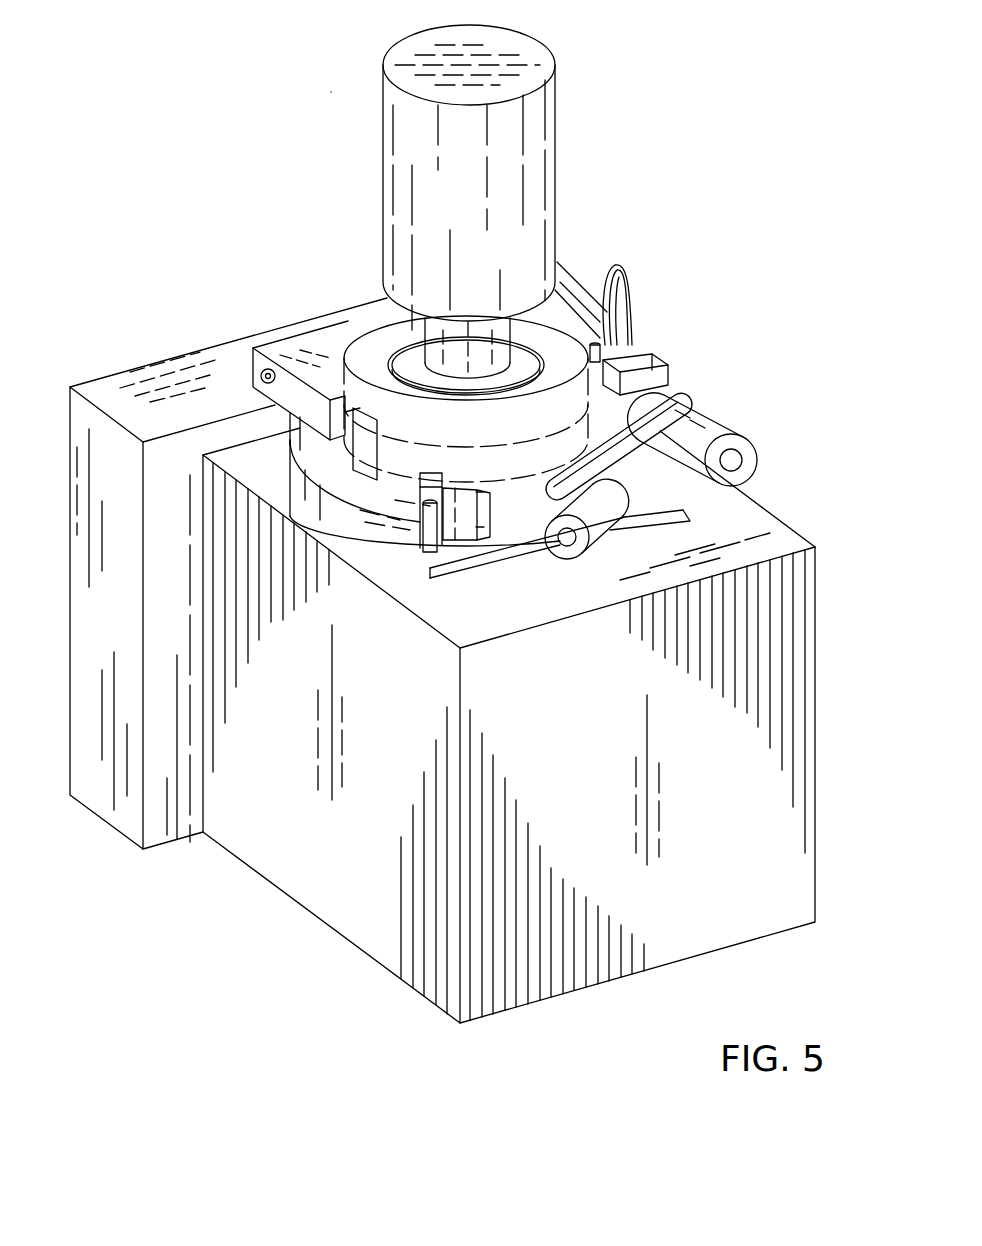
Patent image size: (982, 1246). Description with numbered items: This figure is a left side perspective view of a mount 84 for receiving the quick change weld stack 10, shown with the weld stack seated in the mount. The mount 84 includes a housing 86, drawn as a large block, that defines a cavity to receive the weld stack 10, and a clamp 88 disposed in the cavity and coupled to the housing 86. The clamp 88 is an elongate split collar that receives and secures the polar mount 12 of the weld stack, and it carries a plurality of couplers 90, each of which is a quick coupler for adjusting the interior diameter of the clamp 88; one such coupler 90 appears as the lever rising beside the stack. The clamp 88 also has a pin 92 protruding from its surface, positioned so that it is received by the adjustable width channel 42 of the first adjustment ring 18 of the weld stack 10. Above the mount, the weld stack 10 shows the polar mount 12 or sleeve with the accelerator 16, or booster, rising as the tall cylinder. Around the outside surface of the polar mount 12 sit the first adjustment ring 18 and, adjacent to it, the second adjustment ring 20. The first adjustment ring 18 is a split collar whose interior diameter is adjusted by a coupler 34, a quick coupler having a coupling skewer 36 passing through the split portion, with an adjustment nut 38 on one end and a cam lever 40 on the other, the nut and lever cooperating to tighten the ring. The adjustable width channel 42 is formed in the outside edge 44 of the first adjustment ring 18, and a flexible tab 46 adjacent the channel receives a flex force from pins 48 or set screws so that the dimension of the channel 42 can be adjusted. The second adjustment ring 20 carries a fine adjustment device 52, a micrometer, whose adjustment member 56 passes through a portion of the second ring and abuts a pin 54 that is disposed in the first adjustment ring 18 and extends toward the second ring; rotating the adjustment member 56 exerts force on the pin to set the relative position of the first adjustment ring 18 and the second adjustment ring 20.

The quick change weld stack 10 is at (326, 88).
The polar mount 12 is at (390, 322).
The accelerator 16 is at (553, 115).
The first adjustment ring 18 is at (352, 530).
The second adjustment ring 20 is at (328, 322).
The coupler 34 is at (597, 527).
The coupling skewer 36 is at (570, 552).
The adjustment nut 38 is at (672, 370).
The cam lever 40 is at (690, 400).
The adjustable width channel 42 is at (435, 473).
The outside edge 44 is at (392, 527).
The flexible tab 46 is at (455, 545).
The pins 48 is at (480, 526).
The fine adjustment device 52 is at (740, 468).
The pin 54 is at (600, 350).
The adjustment member 56 is at (732, 432).
The mount 84 is at (126, 366).
The housing 86 is at (790, 532).
The clamp 88 is at (645, 506).
The couplers 90 is at (624, 268).
The pin 92 is at (424, 548).